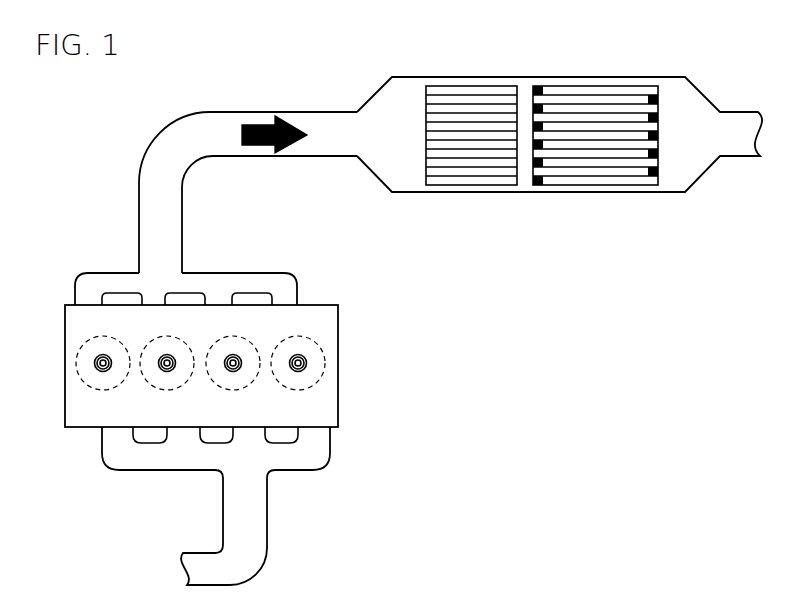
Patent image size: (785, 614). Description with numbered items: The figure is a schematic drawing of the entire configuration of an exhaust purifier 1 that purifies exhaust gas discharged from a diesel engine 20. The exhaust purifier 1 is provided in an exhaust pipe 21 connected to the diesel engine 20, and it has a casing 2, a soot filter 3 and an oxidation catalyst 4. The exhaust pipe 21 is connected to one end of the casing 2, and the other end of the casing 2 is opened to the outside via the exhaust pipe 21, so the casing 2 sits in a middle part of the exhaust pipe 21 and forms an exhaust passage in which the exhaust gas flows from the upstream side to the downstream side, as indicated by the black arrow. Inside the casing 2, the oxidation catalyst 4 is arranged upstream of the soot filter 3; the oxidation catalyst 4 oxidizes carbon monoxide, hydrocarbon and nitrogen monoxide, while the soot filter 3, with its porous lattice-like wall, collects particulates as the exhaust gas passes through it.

The exhaust purifier 1 is at (745, 40).
The casing 2 is at (400, 77).
The soot filter 3 is at (597, 86).
The oxidation catalyst 4 is at (472, 86).
The diesel engine 20 is at (65, 372).
The exhaust pipe 21 is at (139, 222).